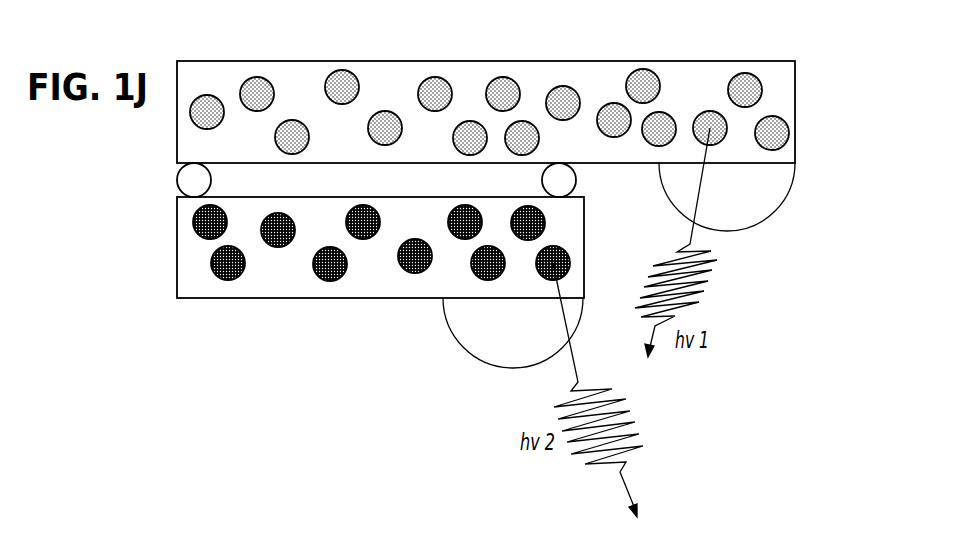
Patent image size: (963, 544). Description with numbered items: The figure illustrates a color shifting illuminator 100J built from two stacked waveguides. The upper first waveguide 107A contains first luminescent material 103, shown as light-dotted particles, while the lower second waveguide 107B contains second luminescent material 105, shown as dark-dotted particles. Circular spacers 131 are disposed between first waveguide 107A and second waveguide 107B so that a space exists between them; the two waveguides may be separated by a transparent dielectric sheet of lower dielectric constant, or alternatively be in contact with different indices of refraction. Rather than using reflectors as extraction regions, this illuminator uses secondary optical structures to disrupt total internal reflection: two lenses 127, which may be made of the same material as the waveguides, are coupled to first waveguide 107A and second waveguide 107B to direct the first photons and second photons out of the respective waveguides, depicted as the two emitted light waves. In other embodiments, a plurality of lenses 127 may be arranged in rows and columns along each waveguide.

The color shifting illuminator 100J is at (220, 43).
The first luminescent material 103 is at (342, 82).
The second luminescent material 105 is at (228, 278).
The first waveguide 107A is at (473, 76).
The second waveguide 107B is at (278, 272).
The lenses 127 is at (767, 187).
The spacers 131 is at (194, 180).